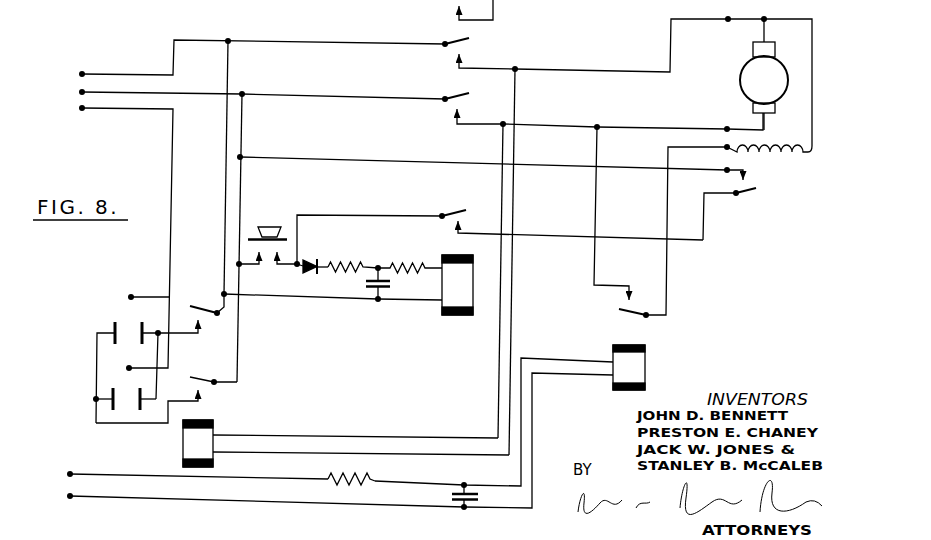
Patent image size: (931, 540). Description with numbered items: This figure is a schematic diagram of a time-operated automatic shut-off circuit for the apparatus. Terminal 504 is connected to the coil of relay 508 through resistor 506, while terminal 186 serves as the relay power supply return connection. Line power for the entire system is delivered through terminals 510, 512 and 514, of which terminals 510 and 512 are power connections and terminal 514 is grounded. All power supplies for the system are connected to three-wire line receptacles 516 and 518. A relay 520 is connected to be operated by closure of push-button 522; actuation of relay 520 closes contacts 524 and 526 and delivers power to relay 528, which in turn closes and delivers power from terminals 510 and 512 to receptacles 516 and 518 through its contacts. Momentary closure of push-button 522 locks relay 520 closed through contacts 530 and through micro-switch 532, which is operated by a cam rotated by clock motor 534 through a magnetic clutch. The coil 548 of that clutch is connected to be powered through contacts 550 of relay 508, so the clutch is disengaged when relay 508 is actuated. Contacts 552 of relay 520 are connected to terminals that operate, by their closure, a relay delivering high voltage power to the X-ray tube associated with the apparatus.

The terminal 186 is at (70, 496).
The terminal 504 is at (70, 474).
The resistor 506 is at (358, 477).
The relay 508 is at (648, 361).
The terminal 510 is at (82, 74).
The terminal 512 is at (82, 92).
The terminal 514 is at (82, 108).
The three-wire line receptacle 516 is at (116, 315).
The three-wire line receptacle 518 is at (82, 400).
The relay 520 is at (448, 301).
The push-button 522 is at (270, 226).
The contacts 524 is at (447, 46).
The contacts 526 is at (447, 101).
The relay 528 is at (215, 421).
The contacts 530 is at (450, 214).
The micro-switch 532 is at (746, 195).
The clock motor 534 is at (751, 80).
The coil 548 is at (786, 155).
The contacts 550 is at (650, 311).
The contacts 552 is at (446, 0).